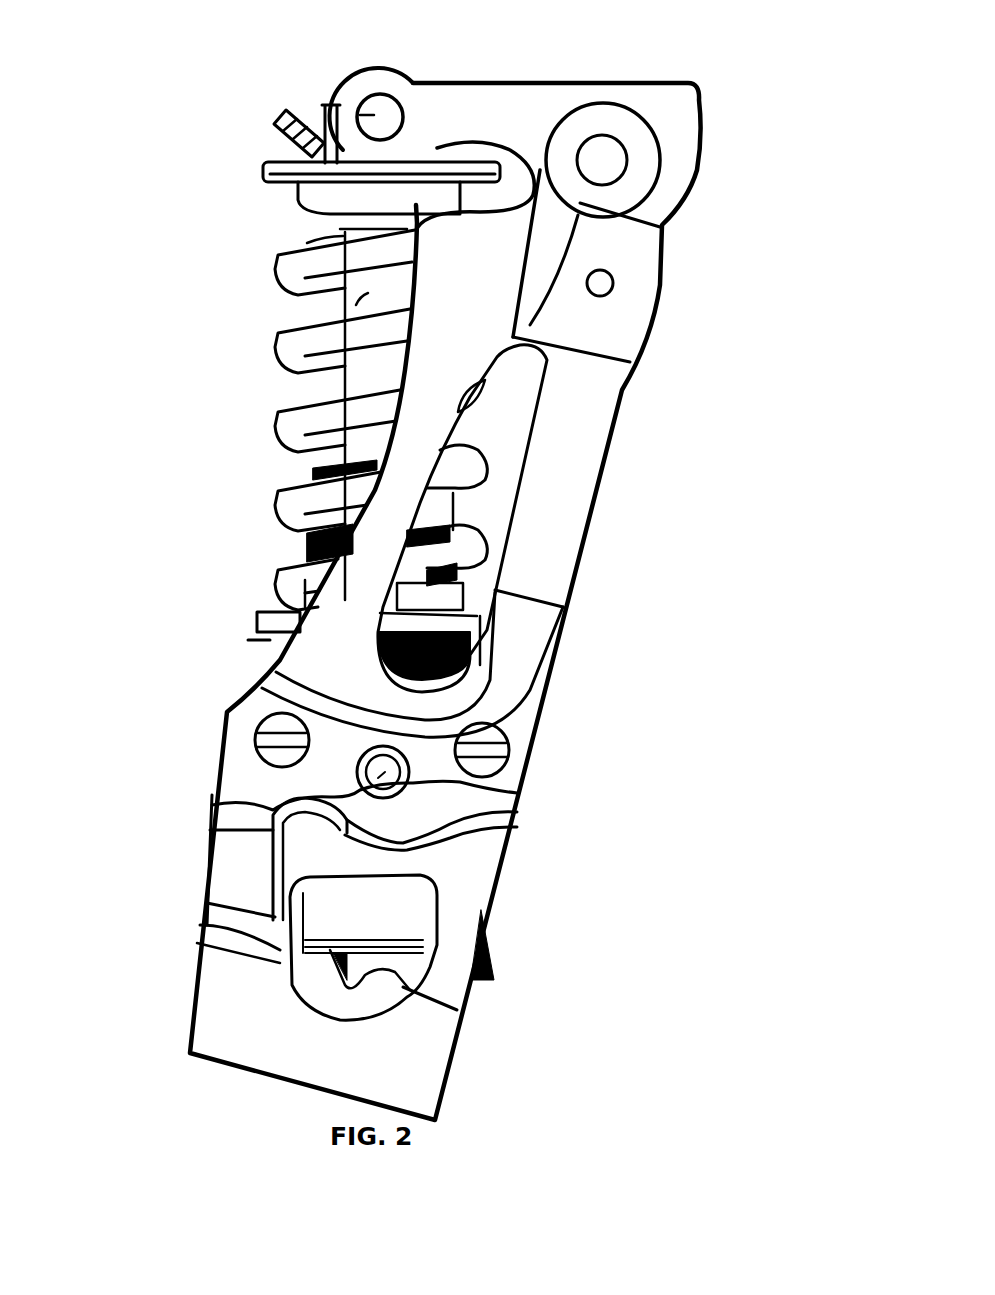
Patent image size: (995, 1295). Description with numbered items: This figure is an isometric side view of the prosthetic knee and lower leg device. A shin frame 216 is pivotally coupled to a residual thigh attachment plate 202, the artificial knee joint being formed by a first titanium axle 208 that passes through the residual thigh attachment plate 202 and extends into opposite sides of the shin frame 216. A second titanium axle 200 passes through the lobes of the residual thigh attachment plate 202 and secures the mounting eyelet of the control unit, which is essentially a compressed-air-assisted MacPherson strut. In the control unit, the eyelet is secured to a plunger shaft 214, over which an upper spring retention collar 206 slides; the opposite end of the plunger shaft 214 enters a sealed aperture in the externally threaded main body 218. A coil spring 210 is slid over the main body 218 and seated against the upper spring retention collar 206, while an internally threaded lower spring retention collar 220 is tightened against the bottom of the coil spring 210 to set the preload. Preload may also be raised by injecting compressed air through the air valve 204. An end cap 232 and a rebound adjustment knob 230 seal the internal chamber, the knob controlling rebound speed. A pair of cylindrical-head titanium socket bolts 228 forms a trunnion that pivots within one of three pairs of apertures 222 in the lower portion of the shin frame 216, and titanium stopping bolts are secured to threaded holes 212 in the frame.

The second titanium axle 200 is at (323, 98).
The residual thigh attachment plate 202 is at (673, 101).
The air valve 204 is at (275, 118).
The upper spring retention collar 206 is at (280, 198).
The first titanium axle 208 is at (607, 165).
The coil spring 210 is at (282, 268).
The threaded holes 212 is at (605, 284).
The plunger shaft 214 is at (320, 318).
The shin frame 216 is at (572, 520).
The main body 218 is at (307, 547).
The lower spring retention collar 220 is at (253, 637).
The apertures 222 is at (237, 750).
The cylindrical-head titanium socket bolts 228 is at (215, 805).
The rebound adjustment knob 230 is at (493, 977).
The end cap 232 is at (273, 914).